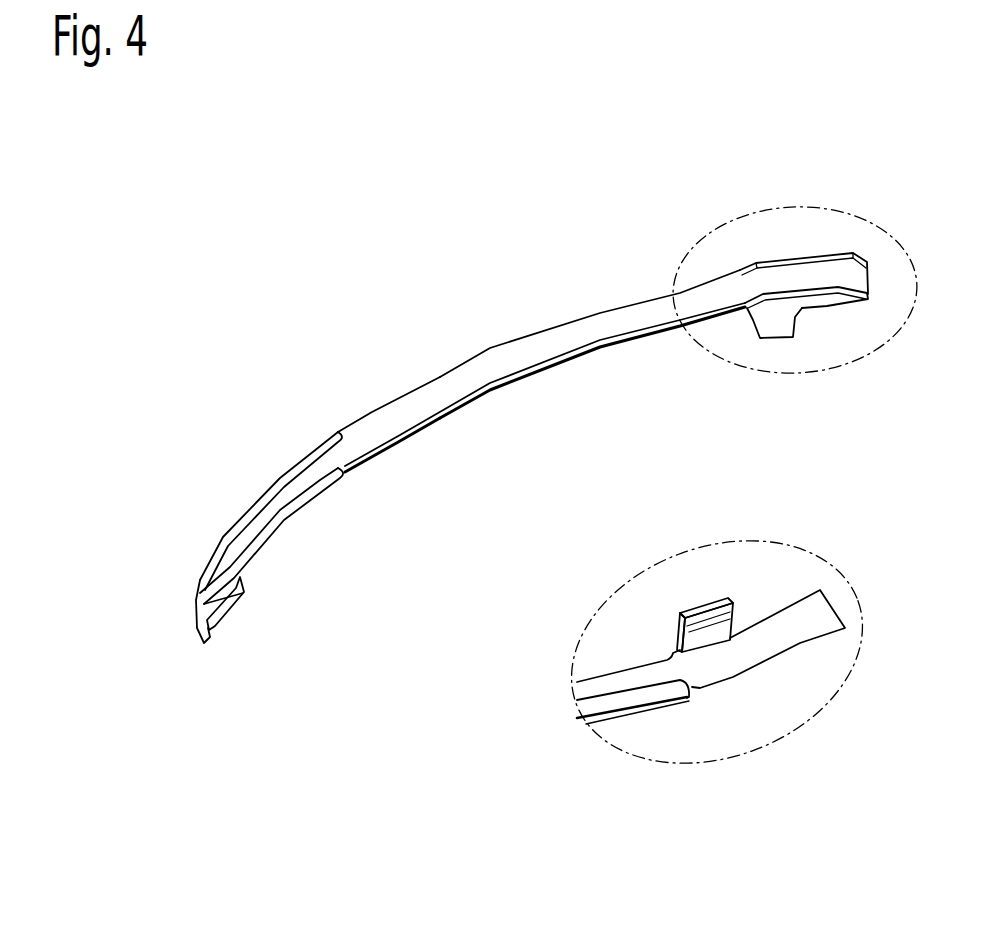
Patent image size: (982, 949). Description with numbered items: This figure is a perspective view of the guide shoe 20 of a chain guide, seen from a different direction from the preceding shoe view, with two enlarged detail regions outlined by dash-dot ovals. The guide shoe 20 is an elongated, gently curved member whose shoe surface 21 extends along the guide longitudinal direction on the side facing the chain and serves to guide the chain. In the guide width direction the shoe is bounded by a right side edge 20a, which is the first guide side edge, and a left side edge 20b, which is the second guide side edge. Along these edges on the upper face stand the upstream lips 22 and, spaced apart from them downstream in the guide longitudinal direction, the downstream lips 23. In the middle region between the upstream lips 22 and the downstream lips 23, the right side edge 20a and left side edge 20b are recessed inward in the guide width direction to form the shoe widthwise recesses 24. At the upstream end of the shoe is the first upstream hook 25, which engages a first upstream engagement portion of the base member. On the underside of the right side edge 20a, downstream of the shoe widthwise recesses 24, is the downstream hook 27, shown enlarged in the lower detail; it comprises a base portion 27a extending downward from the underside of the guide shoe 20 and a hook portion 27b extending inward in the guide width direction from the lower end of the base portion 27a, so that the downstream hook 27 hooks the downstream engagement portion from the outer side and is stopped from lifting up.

The guide shoe 20 is at (170, 200).
The right side edge 20a is at (377, 460).
The left side edge 20b is at (372, 407).
The shoe surface 21 is at (613, 320).
The upstream lips 22 is at (273, 477).
The downstream lips 23 is at (805, 255).
The shoe widthwise recesses 24 is at (493, 340).
The first upstream hook 25 is at (223, 632).
The downstream hook 27 is at (765, 328).
The base portion 27a is at (703, 637).
The hook portion 27b is at (724, 610).